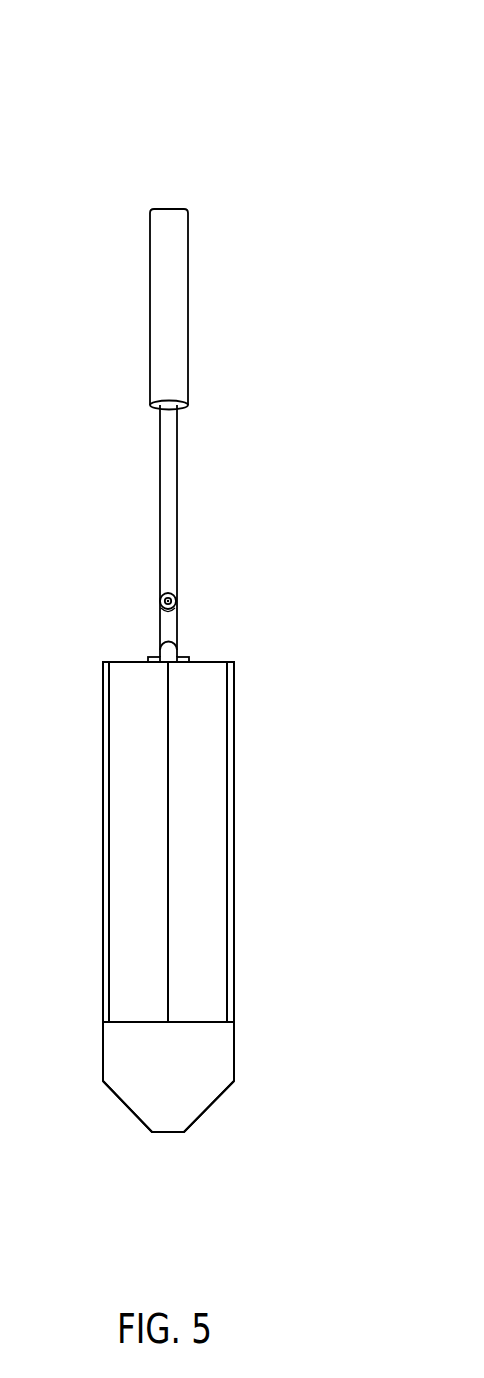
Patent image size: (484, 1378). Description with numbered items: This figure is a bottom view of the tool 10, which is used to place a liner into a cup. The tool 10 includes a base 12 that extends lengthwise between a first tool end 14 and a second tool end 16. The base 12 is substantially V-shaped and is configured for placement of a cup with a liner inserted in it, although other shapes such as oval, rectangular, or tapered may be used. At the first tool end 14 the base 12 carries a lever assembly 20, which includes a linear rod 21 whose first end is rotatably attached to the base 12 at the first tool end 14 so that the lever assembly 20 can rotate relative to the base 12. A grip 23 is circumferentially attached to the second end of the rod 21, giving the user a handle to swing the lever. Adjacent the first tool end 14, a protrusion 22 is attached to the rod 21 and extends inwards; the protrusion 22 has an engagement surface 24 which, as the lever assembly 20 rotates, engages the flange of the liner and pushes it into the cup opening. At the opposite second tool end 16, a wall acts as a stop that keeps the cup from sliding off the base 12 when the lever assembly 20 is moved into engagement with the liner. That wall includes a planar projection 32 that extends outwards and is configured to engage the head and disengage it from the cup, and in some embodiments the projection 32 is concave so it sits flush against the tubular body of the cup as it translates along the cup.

The tool 10 is at (293, 181).
The lever assembly 20 is at (204, 331).
The grip 23 is at (160, 346).
The linear rod 21 is at (164, 501).
The engagement surface 24 is at (160, 597).
The protrusion 22 is at (175, 603).
The base 12 is at (217, 832).
The first tool end 14 is at (208, 661).
The second tool end 16 is at (210, 1022).
The planar projection 32 is at (203, 1103).